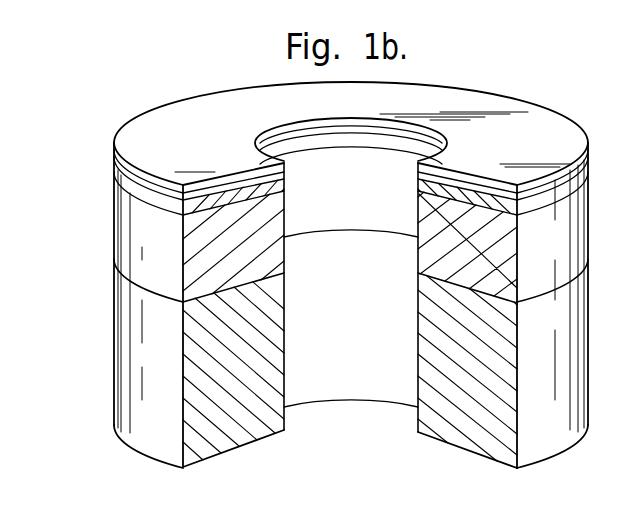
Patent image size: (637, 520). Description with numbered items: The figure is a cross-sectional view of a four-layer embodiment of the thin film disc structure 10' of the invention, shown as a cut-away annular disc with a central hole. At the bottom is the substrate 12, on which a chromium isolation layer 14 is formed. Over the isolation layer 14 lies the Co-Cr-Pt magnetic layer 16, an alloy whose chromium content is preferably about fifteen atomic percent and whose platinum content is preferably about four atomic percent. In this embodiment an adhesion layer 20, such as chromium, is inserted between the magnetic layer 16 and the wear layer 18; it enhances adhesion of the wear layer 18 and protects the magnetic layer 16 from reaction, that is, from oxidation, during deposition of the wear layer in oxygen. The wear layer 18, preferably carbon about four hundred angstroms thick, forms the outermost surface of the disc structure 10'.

The thin film disc structure 10' is at (332, 247).
The substrate 12 is at (138, 385).
The chromium isolation layer 14 is at (148, 272).
The Co-Cr-Pt magnetic layer 16 is at (140, 193).
The wear layer 18 is at (142, 145).
The adhesion layer 20 is at (118, 172).